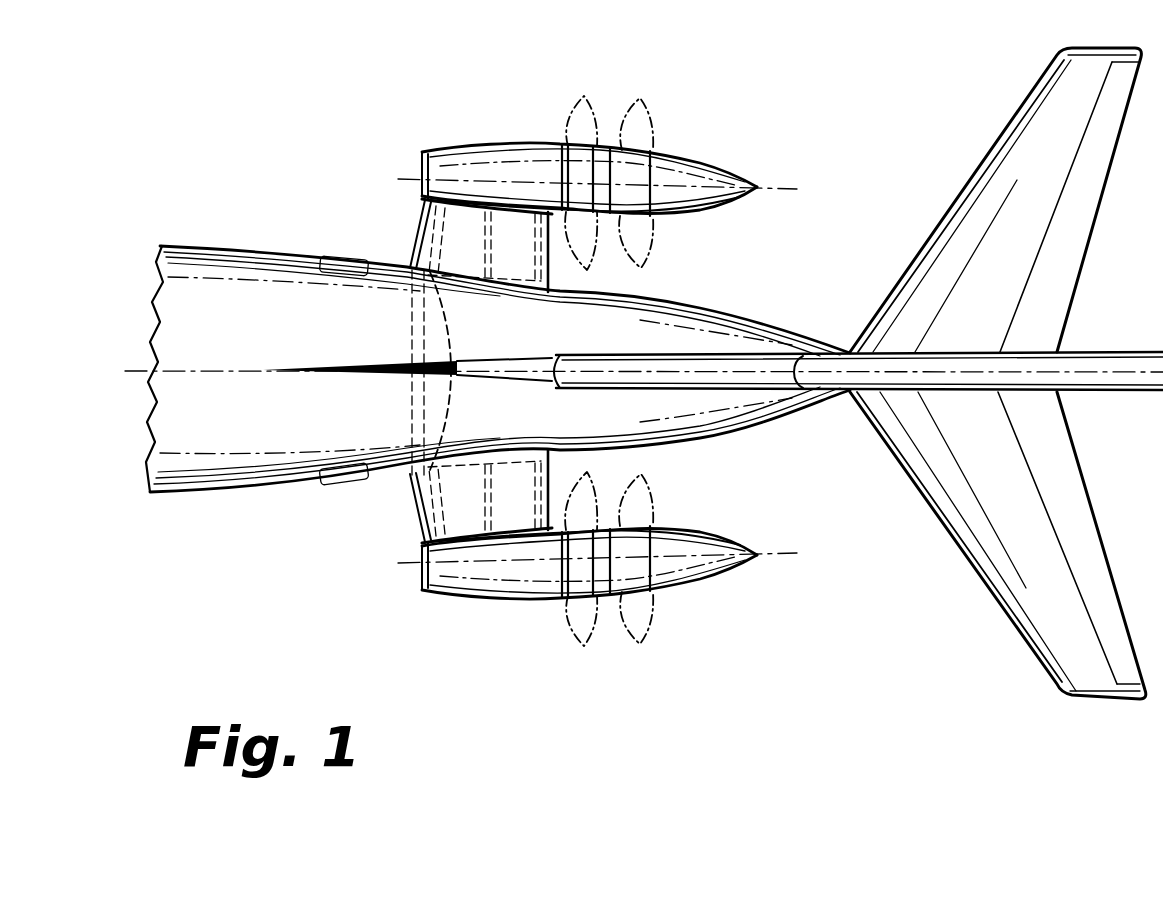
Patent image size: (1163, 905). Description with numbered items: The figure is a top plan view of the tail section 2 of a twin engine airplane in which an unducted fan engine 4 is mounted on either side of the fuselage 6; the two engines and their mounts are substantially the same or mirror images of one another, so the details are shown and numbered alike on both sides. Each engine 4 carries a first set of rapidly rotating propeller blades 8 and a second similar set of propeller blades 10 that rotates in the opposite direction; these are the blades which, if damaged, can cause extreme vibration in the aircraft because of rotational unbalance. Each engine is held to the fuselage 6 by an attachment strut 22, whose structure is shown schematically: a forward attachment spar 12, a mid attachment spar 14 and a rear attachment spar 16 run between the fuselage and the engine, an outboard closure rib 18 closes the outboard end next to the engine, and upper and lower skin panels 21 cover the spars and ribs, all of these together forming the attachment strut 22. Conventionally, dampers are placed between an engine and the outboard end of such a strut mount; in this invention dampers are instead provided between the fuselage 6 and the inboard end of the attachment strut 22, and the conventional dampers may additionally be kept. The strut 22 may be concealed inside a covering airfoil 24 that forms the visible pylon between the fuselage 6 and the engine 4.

The tail section 2 is at (794, 290).
The unducted fan engine 4 is at (499, 134).
The fuselage 6 is at (716, 308).
The first set of propeller blades 8 is at (593, 98).
The second set of propeller blades 10 is at (652, 100).
The forward attachment spar 12 is at (425, 216).
The mid attachment spar 14 is at (487, 254).
The rear attachment spar 16 is at (548, 263).
The outboard closure rib 18 is at (505, 239).
The upper and lower skin panels 21 is at (516, 228).
The attachment strut 22 is at (423, 250).
The covering airfoil 24 is at (422, 206).